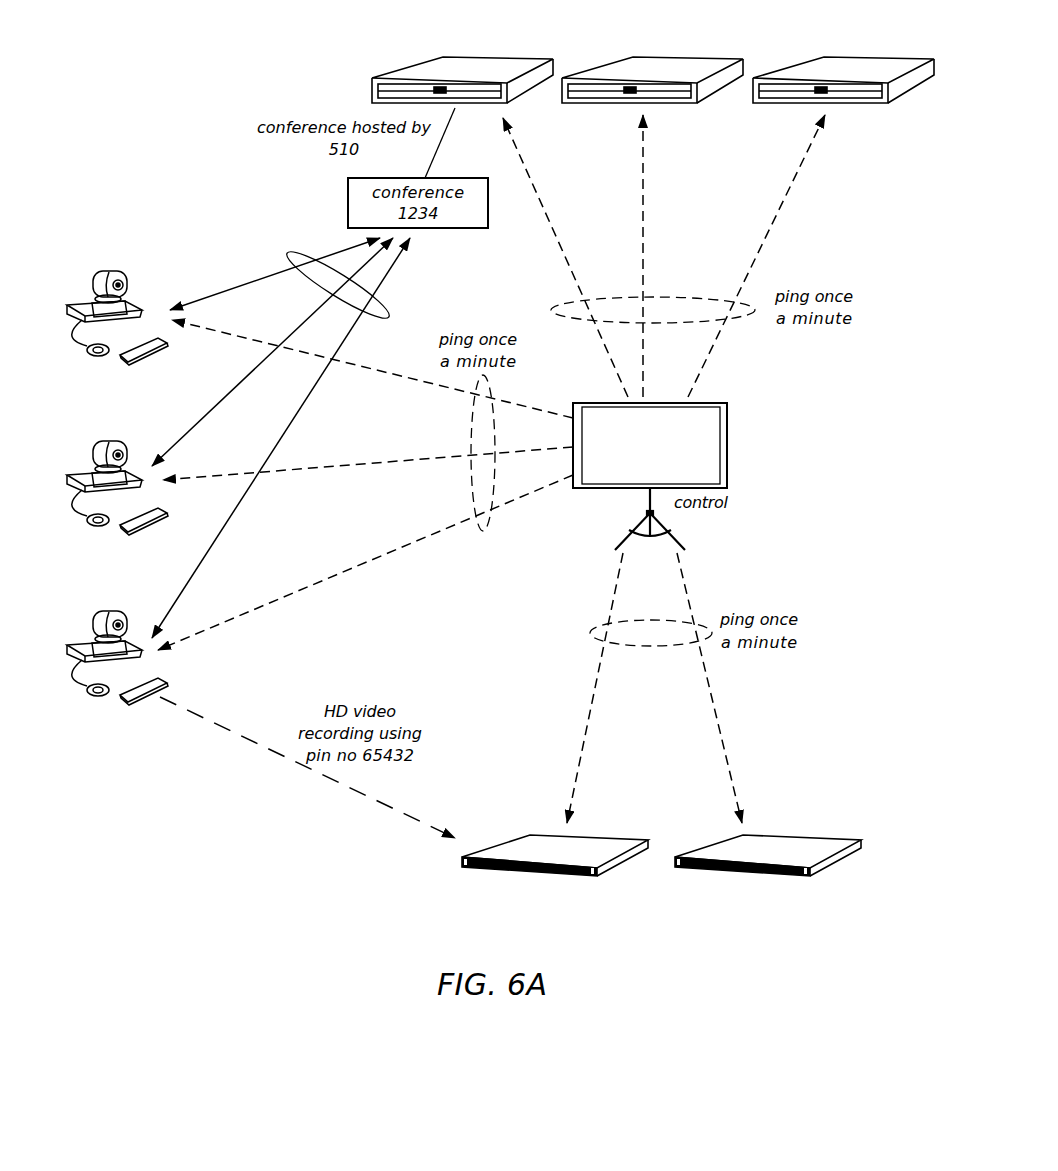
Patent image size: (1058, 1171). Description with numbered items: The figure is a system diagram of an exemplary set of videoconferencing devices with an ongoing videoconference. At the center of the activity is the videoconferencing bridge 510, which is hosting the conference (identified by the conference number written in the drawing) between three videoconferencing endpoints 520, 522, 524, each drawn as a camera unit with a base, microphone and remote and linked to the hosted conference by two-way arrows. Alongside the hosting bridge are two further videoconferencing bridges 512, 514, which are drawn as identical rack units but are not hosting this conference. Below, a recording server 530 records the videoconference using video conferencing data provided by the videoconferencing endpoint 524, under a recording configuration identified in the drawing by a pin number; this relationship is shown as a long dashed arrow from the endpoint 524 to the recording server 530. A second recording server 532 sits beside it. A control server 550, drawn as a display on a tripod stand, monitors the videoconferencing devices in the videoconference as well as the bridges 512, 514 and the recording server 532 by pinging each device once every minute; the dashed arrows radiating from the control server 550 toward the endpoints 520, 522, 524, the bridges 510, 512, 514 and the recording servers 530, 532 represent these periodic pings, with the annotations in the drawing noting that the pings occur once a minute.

The videoconferencing bridge 510 is at (448, 56).
The videoconferencing bridge 512 is at (639, 56).
The videoconferencing bridge 514 is at (829, 56).
The videoconferencing endpoint 520 is at (101, 266).
The videoconferencing endpoint 522 is at (101, 436).
The videoconferencing endpoint 524 is at (101, 606).
The recording server 530 is at (599, 836).
The recording server 532 is at (797, 836).
The control server 550 is at (729, 401).